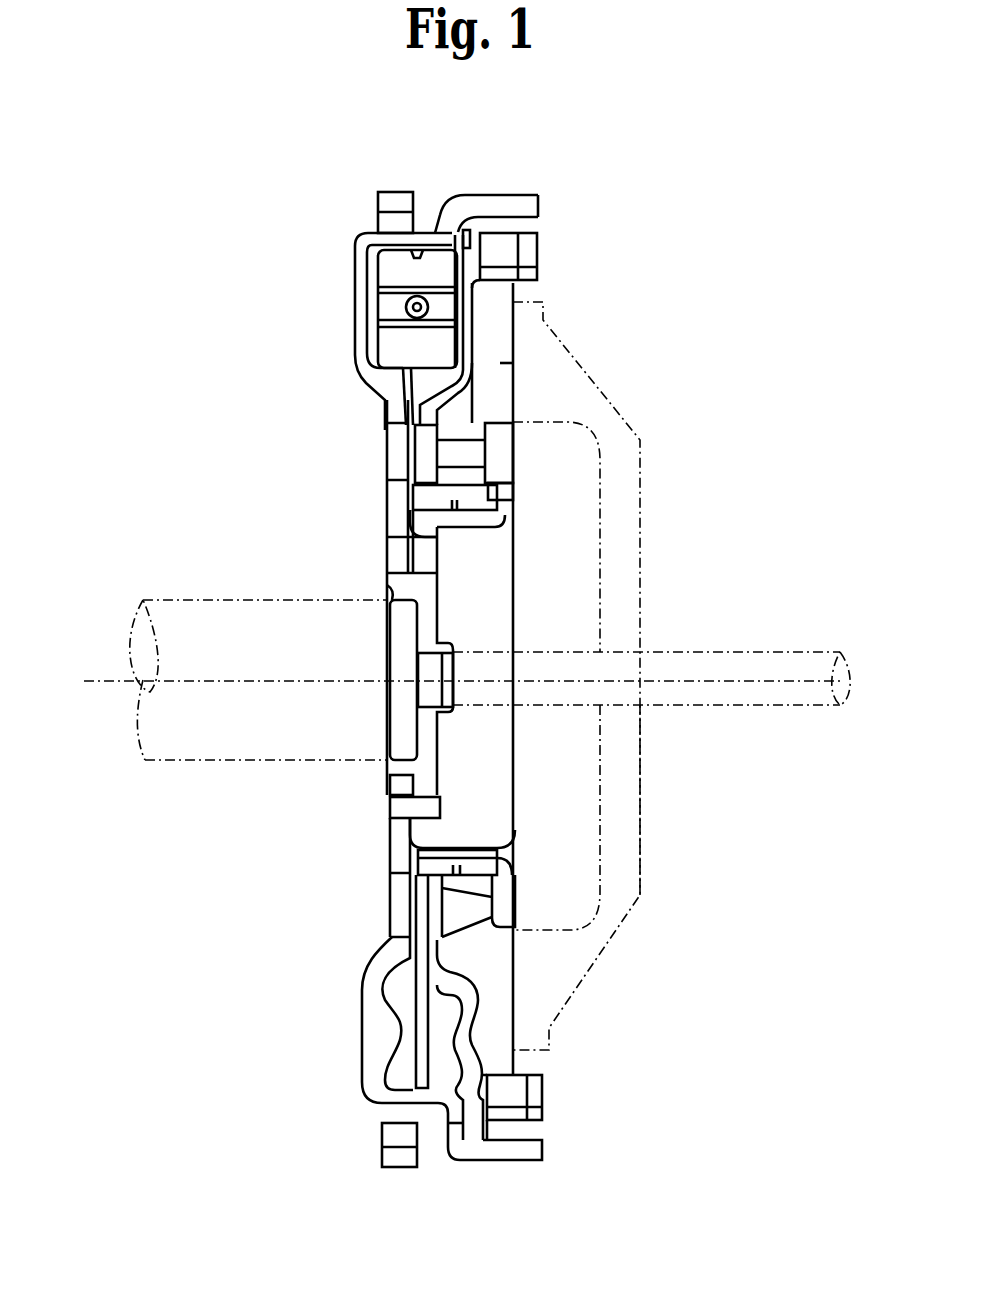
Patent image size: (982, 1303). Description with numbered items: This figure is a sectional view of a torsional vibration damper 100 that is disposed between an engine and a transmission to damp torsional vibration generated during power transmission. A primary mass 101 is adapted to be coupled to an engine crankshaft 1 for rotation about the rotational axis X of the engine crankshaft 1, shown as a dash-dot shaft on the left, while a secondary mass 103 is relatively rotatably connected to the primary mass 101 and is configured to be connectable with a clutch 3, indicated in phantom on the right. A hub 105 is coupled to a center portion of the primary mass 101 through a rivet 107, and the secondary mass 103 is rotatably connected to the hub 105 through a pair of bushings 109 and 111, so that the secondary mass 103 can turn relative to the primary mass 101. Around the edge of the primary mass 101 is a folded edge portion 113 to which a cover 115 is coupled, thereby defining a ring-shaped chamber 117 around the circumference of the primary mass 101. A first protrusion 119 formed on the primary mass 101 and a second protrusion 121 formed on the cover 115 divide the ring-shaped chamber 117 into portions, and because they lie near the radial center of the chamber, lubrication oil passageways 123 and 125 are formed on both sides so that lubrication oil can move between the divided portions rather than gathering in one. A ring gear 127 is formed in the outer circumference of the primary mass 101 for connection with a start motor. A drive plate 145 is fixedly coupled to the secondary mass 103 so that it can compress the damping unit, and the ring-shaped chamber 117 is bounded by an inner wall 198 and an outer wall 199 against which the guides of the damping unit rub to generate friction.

The engine crankshaft 1 is at (222, 760).
The clutch 3 is at (640, 890).
The torsional vibration damper 100 is at (258, 462).
The primary mass 101 is at (357, 317).
The secondary mass 103 is at (513, 365).
The hub 105 is at (388, 598).
The rivet 107 is at (392, 808).
The bushing 109 is at (500, 500).
The bushing 111 is at (412, 508).
The folded edge portion 113 is at (505, 195).
The cover 115 is at (465, 290).
The ring-shaped chamber 117 is at (398, 1092).
The first protrusion 119 is at (388, 1040).
The second protrusion 121 is at (460, 1040).
The lubrication oil passageway 123 is at (383, 1107).
The lubrication oil passageway 125 is at (390, 987).
The ring gear 127 is at (378, 226).
The drive plate 145 is at (425, 402).
The inner wall 198 is at (377, 370).
The outer wall 199 is at (417, 250).